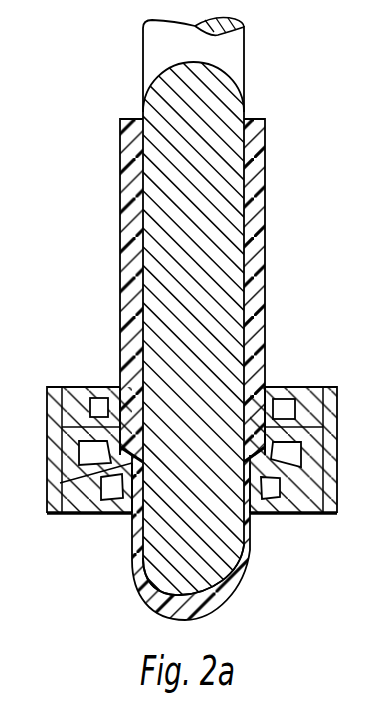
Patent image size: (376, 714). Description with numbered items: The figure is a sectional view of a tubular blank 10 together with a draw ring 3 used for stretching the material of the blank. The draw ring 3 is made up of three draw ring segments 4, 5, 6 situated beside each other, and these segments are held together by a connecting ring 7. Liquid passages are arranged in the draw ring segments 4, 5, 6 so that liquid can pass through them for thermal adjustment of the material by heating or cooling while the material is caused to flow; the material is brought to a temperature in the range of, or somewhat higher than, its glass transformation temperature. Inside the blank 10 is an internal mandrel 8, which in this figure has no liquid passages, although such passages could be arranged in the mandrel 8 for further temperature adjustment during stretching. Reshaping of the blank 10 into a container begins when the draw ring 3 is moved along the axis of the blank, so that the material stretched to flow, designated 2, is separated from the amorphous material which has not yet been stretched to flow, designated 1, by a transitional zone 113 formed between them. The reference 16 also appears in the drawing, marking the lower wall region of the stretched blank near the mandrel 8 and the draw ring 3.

The internal mandrel 8 is at (232, 58).
The blank 10 is at (323, 207).
The material not yet stretched to flow 1 is at (137, 410).
The connecting ring 7 is at (338, 389).
The draw ring segment 4 is at (308, 416).
The draw ring segment 5 is at (308, 457).
The draw ring segment 6 is at (305, 500).
The draw ring 3 is at (277, 519).
The material stretched to flow 2 is at (137, 538).
The cup bottom wall 16 is at (248, 549).
The transitional zone 113 is at (131, 458).